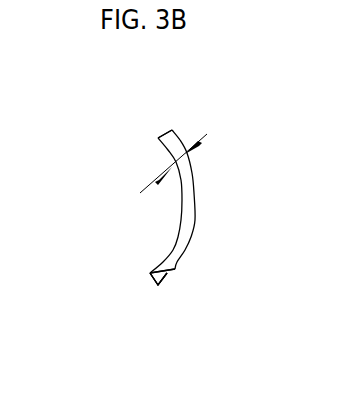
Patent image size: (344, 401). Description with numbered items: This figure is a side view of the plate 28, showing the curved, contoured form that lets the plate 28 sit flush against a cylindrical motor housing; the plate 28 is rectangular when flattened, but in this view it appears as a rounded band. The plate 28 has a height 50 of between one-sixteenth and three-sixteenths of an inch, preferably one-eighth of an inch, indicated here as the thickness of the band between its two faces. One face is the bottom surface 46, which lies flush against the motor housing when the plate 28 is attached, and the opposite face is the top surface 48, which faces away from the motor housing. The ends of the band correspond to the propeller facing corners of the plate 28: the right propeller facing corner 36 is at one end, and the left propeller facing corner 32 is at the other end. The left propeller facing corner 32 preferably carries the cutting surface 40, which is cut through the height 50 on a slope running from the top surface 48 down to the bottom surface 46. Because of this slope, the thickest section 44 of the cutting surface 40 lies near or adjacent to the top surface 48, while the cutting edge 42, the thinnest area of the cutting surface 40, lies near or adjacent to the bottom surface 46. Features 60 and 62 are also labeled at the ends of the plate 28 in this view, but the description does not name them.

The plate 28 is at (176, 227).
The left propeller facing corner 32 is at (106, 299).
The right propeller facing corner 36 is at (115, 132).
The cutting surface 40 is at (189, 325).
The cutting edge 42 is at (112, 324).
The thickest section 44 is at (202, 298).
The bottom surface 46 is at (127, 205).
The top surface 48 is at (243, 199).
The height 50 is at (194, 159).
The notch 60 is at (118, 257).
The end face 62 is at (127, 109).